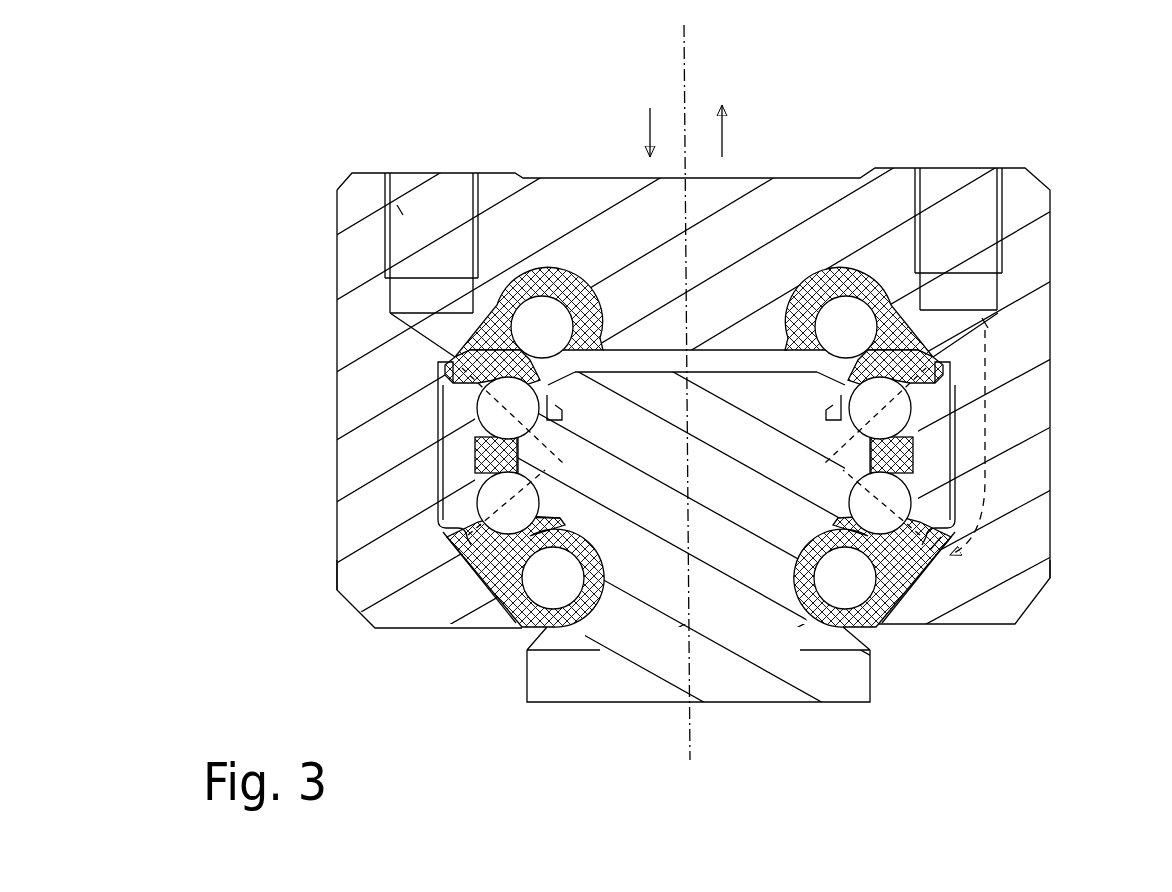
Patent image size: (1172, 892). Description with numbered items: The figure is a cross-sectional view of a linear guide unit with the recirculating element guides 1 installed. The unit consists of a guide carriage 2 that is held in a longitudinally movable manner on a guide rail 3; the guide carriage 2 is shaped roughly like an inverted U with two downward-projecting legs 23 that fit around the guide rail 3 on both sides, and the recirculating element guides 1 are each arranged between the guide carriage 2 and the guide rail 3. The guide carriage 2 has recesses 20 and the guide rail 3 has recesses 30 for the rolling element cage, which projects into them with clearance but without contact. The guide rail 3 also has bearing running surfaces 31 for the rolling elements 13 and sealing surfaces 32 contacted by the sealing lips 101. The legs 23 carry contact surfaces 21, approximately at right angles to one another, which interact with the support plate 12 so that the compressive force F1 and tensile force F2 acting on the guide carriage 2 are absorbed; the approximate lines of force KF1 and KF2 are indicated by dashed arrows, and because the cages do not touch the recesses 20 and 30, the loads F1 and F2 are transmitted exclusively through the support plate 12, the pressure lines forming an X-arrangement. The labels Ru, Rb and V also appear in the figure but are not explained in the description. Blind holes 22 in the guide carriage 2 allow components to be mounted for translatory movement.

The recirculating element guide 1 is at (538, 323).
The guide carriage 2 is at (580, 177).
The guide rail 3 is at (823, 680).
The support plate 12 is at (457, 410).
The rolling elements 13 is at (494, 418).
The recesses 20 is at (605, 336).
The contact surfaces 21 is at (455, 378).
The blind holes 22 is at (390, 212).
The legs 23 is at (375, 572).
The recesses 30 is at (560, 634).
The bearing running surfaces 31 is at (470, 478).
The sealing surfaces 32 is at (547, 522).
The sealing lips 101 is at (897, 537).
The return raceway Ru is at (400, 210).
The load raceway Rb is at (444, 341).
The line of force KF1 is at (453, 366).
The line of force KF2 is at (985, 323).
The compressive force F1 is at (654, 116).
The tensile force F2 is at (720, 116).
The section plane V- V is at (690, 45).